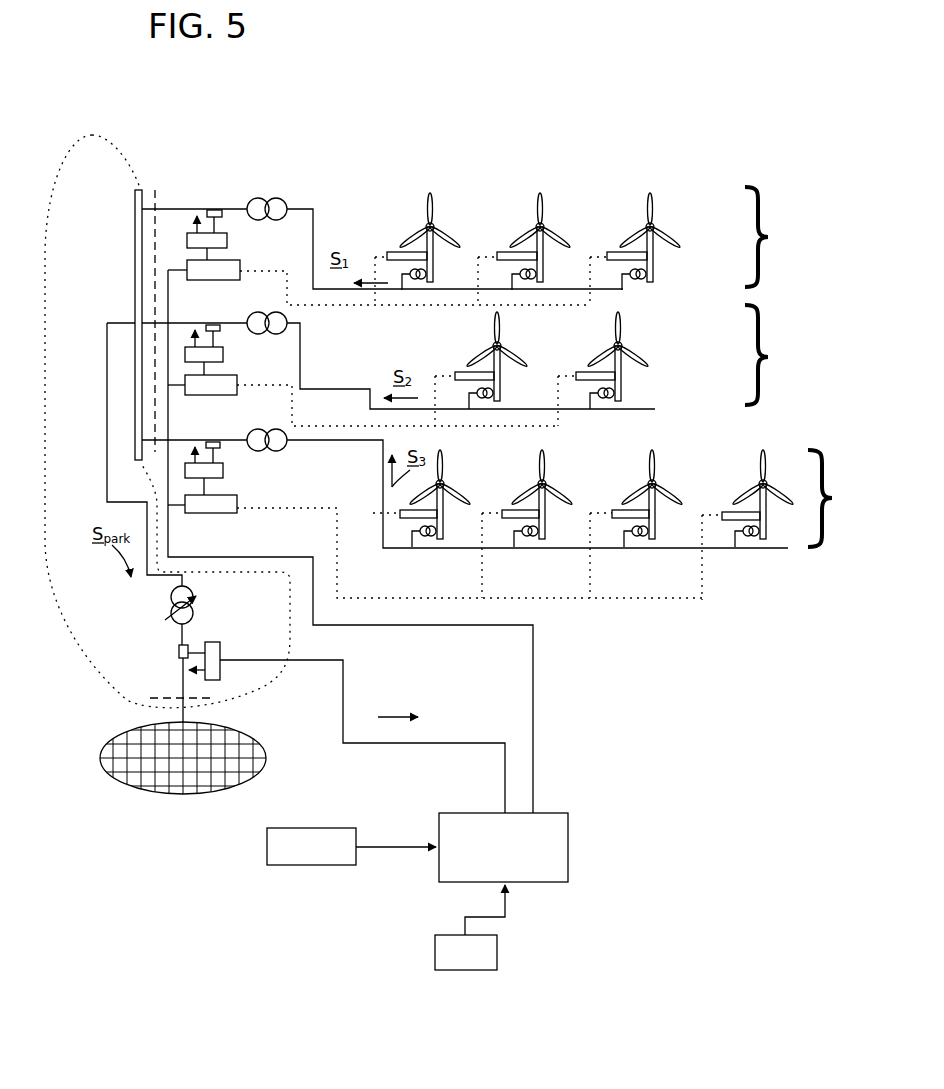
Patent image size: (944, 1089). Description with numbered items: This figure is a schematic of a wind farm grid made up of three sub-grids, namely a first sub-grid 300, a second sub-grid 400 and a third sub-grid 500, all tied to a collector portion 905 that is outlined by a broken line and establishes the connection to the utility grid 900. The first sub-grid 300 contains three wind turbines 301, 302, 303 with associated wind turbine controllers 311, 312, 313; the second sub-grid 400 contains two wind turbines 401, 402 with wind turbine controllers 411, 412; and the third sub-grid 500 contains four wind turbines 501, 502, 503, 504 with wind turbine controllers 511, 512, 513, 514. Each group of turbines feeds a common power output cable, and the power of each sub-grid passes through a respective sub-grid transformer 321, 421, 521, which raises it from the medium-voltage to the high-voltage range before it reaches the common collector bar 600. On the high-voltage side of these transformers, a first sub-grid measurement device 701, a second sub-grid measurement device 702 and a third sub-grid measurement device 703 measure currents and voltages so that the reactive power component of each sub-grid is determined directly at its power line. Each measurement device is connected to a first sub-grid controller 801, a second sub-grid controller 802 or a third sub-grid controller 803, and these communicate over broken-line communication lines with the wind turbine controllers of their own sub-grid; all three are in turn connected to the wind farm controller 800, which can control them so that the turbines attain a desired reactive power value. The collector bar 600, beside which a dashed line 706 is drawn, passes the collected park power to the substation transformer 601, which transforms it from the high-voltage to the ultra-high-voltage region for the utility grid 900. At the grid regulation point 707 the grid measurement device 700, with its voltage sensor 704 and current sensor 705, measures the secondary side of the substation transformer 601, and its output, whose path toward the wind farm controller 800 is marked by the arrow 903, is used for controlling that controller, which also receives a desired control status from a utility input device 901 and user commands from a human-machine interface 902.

The first sub-grid 300 is at (768, 237).
The wind turbine 301 is at (445, 225).
The wind turbine 302 is at (555, 225).
The wind turbine 303 is at (670, 224).
The wind turbine controller 311 is at (390, 254).
The wind turbine controller 312 is at (500, 254).
The wind turbine controller 313 is at (608, 252).
The sub-grid transformer 321 is at (268, 199).
The second sub-grid 400 is at (768, 357).
The wind turbine 401 is at (533, 332).
The wind turbine 402 is at (657, 338).
The wind turbine controller 411 is at (455, 376).
The wind turbine controller 412 is at (577, 377).
The sub-grid transformer 421 is at (287, 313).
The third sub-grid 500 is at (862, 487).
The wind turbine 501 is at (459, 481).
The wind turbine 502 is at (564, 484).
The wind turbine 503 is at (674, 486).
The wind turbine 504 is at (775, 471).
The wind turbine controller 511 is at (405, 516).
The wind turbine controller 512 is at (513, 516).
The wind turbine controller 513 is at (624, 517).
The wind turbine controller 514 is at (738, 518).
The sub-grid transformer 521 is at (285, 442).
The collector bar 600 is at (133, 233).
The substation transformer 601 is at (197, 620).
The grid measurement device 700 is at (218, 662).
The first sub-grid measurement device 701 is at (193, 236).
The second sub-grid measurement device 702 is at (223, 355).
The third sub-grid measurement device 703 is at (225, 480).
The voltage sensor 704 is at (182, 671).
The current sensor 705 is at (180, 650).
The park boundary line 706 is at (152, 190).
The grid regulation point 707 is at (157, 700).
The wind farm controller 800 is at (455, 830).
The first sub-grid controller 801 is at (212, 282).
The second sub-grid controller 802 is at (200, 385).
The third sub-grid controller 803 is at (222, 507).
The utility grid 900 is at (173, 777).
The utility input device 901 is at (310, 845).
The human-machine interface 902 is at (448, 943).
The control signal flow 903 is at (405, 708).
The collector portion 905 is at (92, 135).